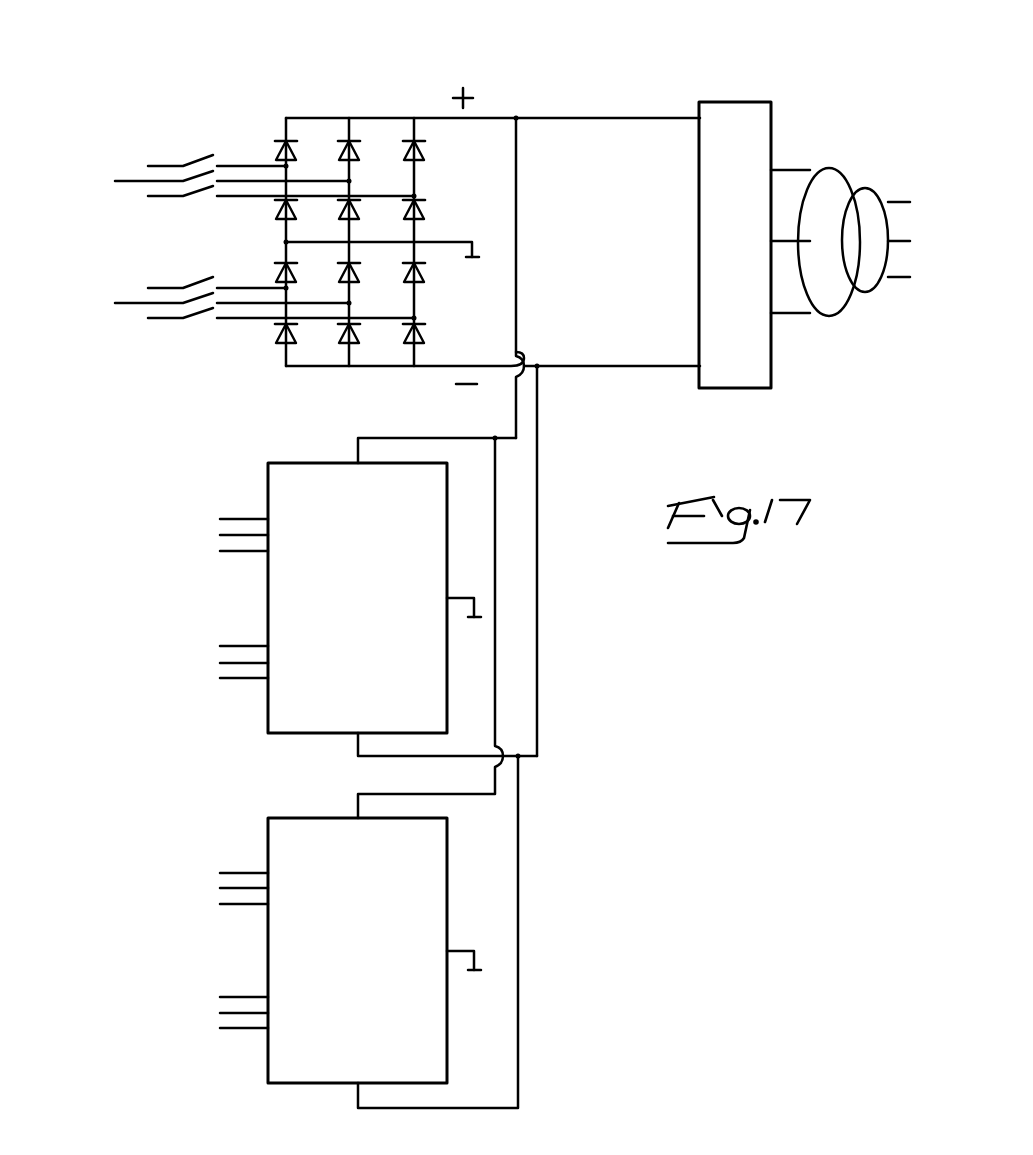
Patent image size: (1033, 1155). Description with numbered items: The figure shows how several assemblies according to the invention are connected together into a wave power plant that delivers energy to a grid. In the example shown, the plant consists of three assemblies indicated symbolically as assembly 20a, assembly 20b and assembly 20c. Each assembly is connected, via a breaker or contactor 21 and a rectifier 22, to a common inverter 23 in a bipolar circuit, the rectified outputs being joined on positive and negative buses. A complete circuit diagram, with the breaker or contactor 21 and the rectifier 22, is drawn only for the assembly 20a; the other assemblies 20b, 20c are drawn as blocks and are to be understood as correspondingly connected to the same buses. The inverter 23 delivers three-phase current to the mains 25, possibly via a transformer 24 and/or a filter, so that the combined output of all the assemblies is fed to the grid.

The assembly 20a is at (360, 216).
The assembly 20b is at (308, 597).
The assembly 20c is at (299, 932).
The breaker or contactor 21 is at (198, 126).
The rectifier 22 is at (452, 214).
The inverter 23 is at (739, 128).
The transformer 24 is at (823, 190).
The mains 25 is at (870, 272).